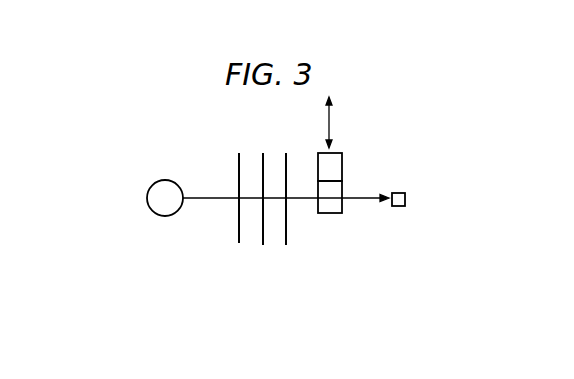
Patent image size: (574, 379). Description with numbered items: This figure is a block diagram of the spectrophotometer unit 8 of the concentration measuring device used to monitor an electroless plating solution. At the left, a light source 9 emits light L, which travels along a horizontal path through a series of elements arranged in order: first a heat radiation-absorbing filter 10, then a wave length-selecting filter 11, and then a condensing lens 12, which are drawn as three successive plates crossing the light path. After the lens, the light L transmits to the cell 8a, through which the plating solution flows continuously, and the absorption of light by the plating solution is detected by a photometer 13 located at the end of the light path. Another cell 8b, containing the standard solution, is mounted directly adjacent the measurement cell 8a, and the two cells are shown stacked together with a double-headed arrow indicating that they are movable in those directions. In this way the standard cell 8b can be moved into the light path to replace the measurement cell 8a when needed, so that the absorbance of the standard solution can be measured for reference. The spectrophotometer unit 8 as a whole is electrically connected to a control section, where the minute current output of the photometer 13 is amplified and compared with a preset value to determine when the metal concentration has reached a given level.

The spectrophotometer unit 8 is at (202, 152).
The cell 8a is at (333, 213).
The cell 8b is at (342, 163).
The light source 9 is at (157, 206).
The light L is at (213, 199).
The heat radiation-absorbing filter 10 is at (239, 243).
The wave length-selecting filter 11 is at (263, 245).
The condensing lens 12 is at (286, 245).
The photometer 13 is at (400, 206).